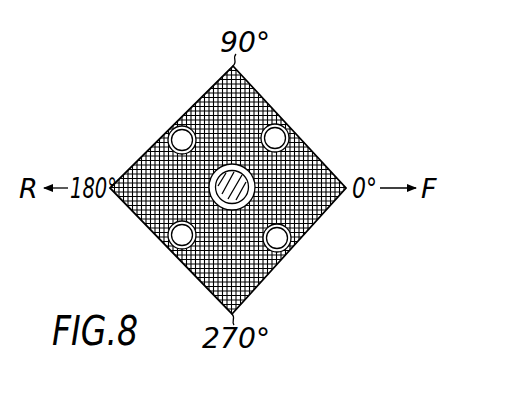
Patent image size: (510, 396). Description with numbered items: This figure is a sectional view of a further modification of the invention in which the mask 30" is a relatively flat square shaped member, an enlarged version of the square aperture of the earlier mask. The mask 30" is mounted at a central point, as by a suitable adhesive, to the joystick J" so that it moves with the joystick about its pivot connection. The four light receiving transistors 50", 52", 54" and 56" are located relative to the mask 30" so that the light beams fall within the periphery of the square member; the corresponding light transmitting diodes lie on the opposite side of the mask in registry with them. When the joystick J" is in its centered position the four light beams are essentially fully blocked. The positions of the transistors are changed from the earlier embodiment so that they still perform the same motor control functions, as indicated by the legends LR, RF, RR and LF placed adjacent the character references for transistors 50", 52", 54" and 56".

The mask 30 is at (266, 91).
The light receiving transistor 56 is at (172, 143).
The light receiving transistor 54 is at (290, 137).
The light receiving transistor 52 is at (184, 247).
The light receiving transistor 50 is at (279, 246).
The joystick J is at (250, 172).